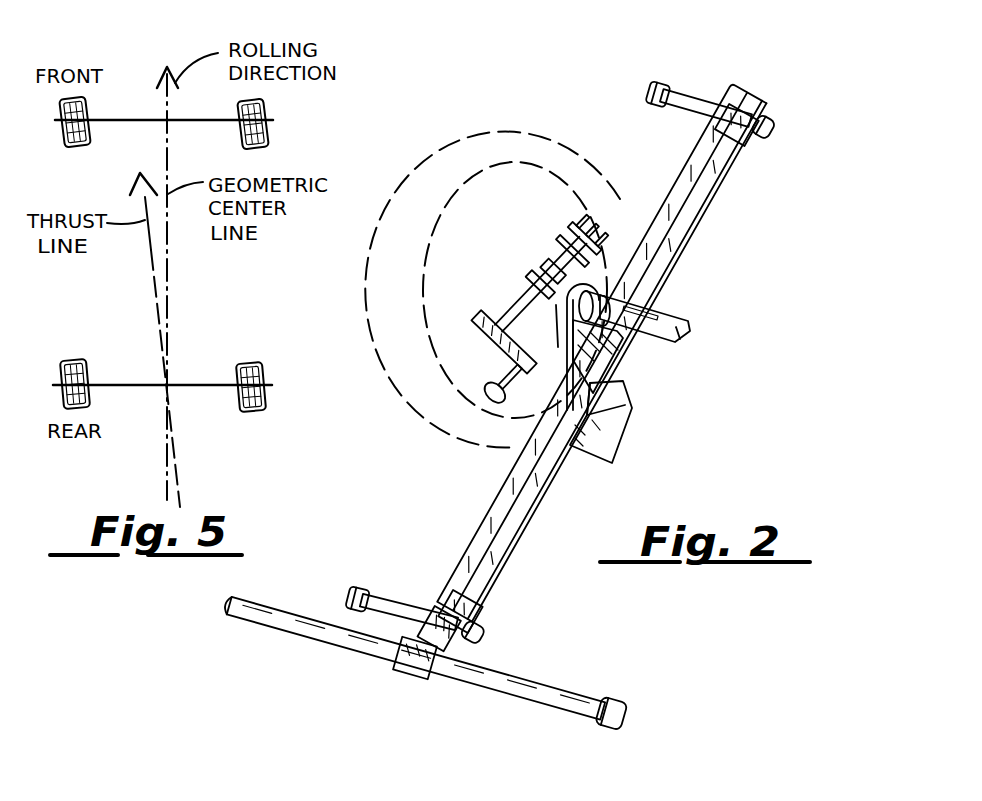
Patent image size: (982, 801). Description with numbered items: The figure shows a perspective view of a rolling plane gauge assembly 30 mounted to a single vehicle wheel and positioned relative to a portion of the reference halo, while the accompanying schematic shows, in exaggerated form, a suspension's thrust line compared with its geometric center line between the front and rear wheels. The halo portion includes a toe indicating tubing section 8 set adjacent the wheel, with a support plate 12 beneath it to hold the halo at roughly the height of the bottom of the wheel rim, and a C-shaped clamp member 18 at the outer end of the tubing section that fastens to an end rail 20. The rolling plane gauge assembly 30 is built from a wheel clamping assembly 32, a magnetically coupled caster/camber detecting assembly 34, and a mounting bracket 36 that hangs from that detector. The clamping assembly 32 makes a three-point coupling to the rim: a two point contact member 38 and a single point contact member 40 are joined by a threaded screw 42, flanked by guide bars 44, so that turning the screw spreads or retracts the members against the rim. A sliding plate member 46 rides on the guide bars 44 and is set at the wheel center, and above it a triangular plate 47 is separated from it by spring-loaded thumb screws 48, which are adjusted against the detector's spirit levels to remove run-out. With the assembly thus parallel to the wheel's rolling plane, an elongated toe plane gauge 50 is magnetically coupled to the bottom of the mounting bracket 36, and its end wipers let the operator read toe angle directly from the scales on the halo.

The toe indicating tubing section 8 is at (527, 515).
The support plate 12 is at (620, 420).
The C-shaped clamp member 18 is at (407, 648).
The end rail 20 is at (547, 692).
The rolling plane gauge assembly 30 is at (753, 256).
The wheel clamping assembly 32 is at (606, 246).
The caster/camber detecting assembly 34 is at (686, 319).
The mounting bracket 36 is at (607, 358).
The two point contact member 38 is at (488, 338).
The single point contact member 40 is at (608, 249).
The threaded screw 42 is at (532, 323).
The guide bar 44 is at (558, 243).
The sliding plate member 46 is at (545, 268).
The triangular plate 47 is at (535, 283).
The spring-loaded thumb screw 48 is at (552, 337).
The toe plane gauge 50 is at (680, 226).